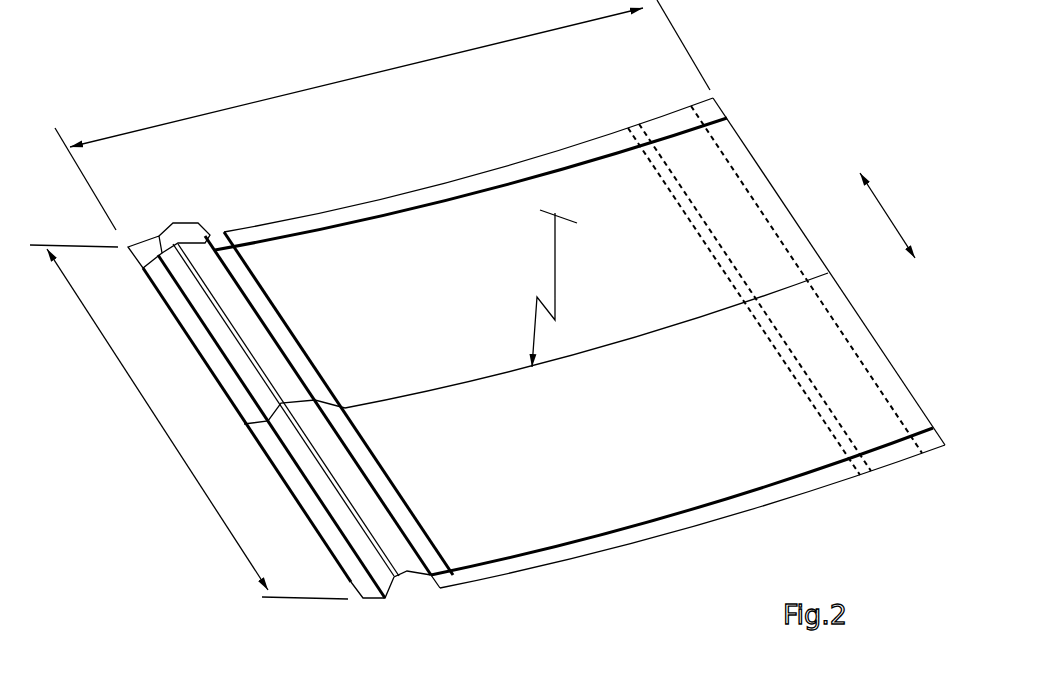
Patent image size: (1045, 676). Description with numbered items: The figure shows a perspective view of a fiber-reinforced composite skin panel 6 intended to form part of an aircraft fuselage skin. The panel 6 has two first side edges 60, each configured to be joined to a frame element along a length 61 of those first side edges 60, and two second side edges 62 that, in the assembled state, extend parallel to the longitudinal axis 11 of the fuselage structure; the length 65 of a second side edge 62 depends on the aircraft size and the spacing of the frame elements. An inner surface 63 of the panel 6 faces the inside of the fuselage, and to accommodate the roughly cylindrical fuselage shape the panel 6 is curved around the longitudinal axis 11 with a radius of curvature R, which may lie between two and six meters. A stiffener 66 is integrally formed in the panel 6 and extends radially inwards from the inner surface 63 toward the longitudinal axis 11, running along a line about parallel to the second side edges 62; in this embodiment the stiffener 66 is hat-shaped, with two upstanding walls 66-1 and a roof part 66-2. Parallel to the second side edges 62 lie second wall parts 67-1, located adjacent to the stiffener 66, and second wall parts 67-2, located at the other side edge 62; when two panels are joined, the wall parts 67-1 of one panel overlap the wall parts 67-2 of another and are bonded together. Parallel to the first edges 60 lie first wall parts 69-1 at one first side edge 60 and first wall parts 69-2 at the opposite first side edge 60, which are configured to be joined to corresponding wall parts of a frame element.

The fiber-reinforced composite skin panel 6 is at (280, 195).
The longitudinal axis 11 is at (887, 215).
The first side edges 60 is at (655, 117).
The length of first side edges 61 is at (382, 115).
The second side edges 62 is at (763, 167).
The inner surface 63 is at (656, 283).
The length of second side edge 65 is at (189, 422).
The stiffener 66 is at (301, 408).
The upstanding walls 66-1 is at (323, 478).
The roof part 66-2 is at (392, 538).
The second wall parts adjacent to stiffener 67-1 is at (345, 554).
The second wall parts at side edge 67-2 is at (693, 220).
The first wall parts at one first side edge 69-1 is at (548, 555).
The first wall parts at opposite first side edge 69-2 is at (383, 207).
The radius of curvature R is at (544, 288).